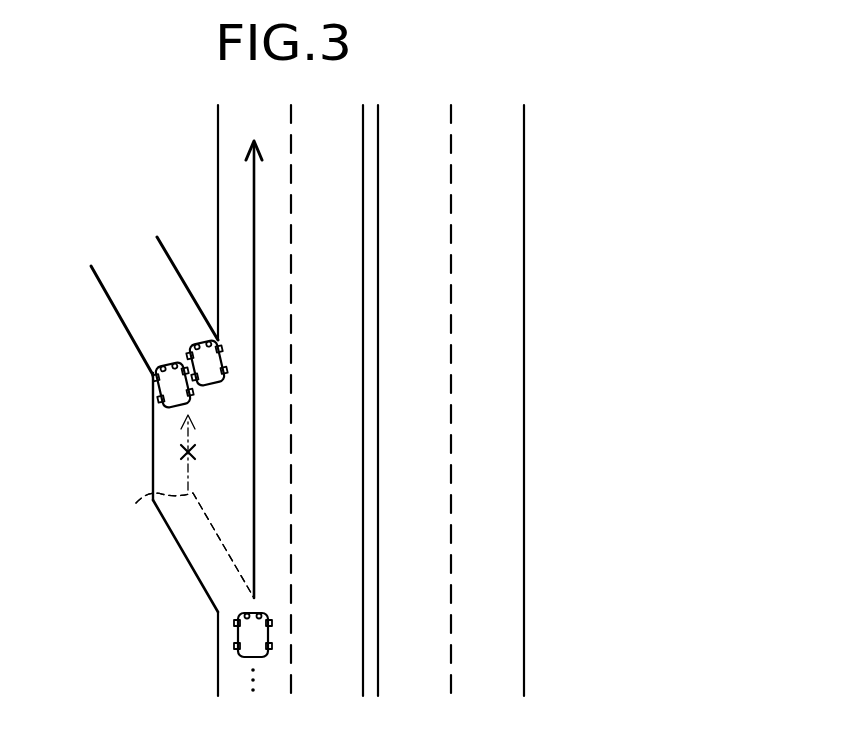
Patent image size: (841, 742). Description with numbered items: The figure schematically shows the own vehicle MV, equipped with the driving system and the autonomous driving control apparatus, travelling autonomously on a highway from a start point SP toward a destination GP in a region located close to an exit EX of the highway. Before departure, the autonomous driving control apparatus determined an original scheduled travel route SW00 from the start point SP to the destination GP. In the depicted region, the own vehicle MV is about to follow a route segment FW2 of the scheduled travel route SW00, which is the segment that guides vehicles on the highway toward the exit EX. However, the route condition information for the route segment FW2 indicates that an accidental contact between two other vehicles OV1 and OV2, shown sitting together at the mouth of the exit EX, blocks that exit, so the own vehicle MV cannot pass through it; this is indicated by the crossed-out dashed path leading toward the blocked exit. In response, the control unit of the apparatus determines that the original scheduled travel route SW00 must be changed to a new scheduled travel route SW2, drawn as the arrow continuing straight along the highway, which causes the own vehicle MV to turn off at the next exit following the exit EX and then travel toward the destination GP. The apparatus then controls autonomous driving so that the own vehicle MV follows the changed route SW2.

The destination GP is at (118, 285).
The new scheduled travel route SW2 is at (254, 205).
The exit EX is at (113, 289).
The other vehicle OV1 is at (153, 388).
The other vehicle OV2 is at (192, 348).
The route segment FW2 is at (160, 541).
The scheduled travel route SW00 is at (160, 545).
The own vehicle MV is at (247, 660).
The start point SP is at (253, 696).